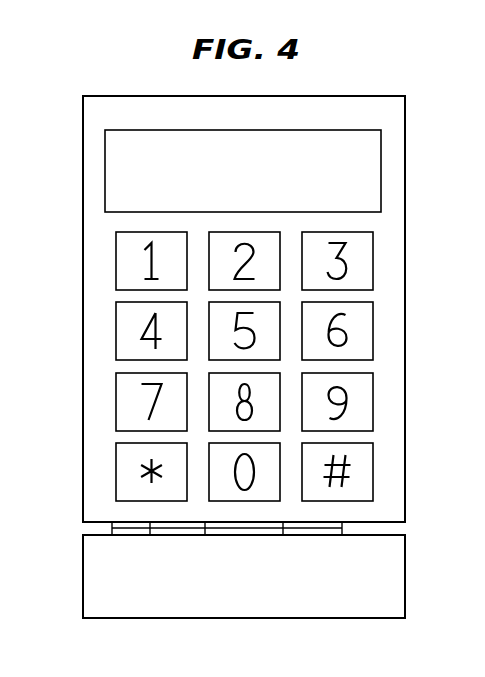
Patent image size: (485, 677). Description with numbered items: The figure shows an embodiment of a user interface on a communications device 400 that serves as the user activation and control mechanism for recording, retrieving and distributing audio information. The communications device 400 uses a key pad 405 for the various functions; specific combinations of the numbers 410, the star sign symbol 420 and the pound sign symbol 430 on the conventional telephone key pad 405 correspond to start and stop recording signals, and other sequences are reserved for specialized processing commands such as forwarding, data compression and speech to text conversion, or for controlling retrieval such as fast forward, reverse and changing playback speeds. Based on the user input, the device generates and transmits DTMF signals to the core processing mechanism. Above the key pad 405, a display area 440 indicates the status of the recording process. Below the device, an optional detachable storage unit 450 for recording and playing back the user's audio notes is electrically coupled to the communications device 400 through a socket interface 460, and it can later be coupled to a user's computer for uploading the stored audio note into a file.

The communications device 400 is at (357, 92).
The key pad 405 is at (98, 232).
The numbers 410 is at (124, 269).
The star sign symbol 420 is at (116, 475).
The pound sign symbol 430 is at (372, 470).
The display area 440 is at (113, 143).
The detachable storage unit 450 is at (105, 598).
The socket interface 460 is at (112, 530).